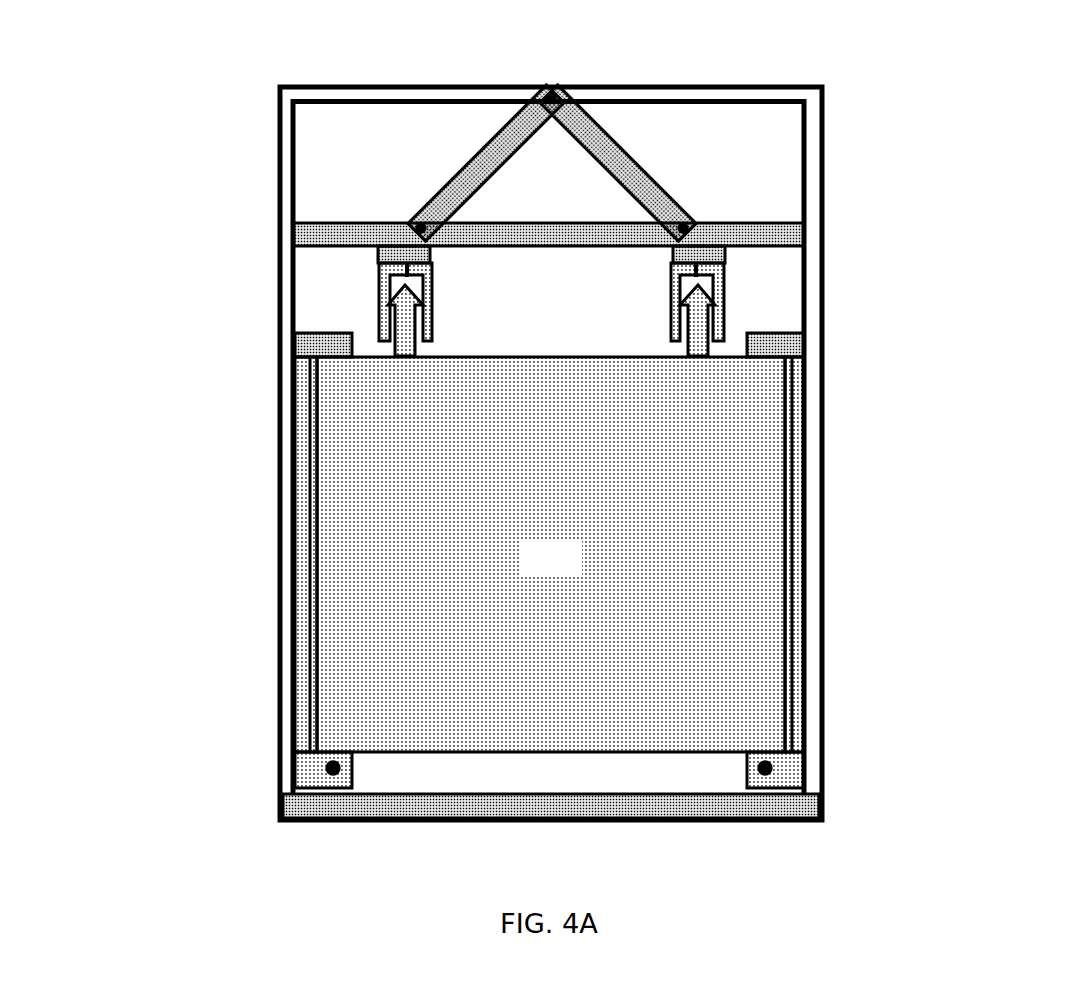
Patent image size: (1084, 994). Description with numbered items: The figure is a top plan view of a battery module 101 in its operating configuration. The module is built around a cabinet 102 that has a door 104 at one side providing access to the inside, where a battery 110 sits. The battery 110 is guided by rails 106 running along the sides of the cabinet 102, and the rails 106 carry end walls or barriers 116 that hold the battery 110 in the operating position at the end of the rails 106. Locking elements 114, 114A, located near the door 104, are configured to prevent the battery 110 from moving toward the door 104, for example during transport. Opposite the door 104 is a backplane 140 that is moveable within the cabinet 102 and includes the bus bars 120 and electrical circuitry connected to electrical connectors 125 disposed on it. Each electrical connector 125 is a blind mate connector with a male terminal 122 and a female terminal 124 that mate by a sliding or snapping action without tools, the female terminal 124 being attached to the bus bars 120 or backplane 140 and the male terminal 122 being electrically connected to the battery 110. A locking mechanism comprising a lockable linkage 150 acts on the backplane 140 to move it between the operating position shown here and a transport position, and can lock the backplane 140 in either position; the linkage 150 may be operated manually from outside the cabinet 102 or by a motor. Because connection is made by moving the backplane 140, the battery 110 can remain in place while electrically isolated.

The battery module 101 is at (576, 38).
The cabinet 102 is at (825, 455).
The door 104 is at (283, 808).
The rails 106 is at (305, 558).
The battery 110 is at (577, 571).
The locking element 114 is at (430, 735).
The locking element 114A is at (328, 767).
The end wall or barrier 116 is at (308, 343).
The bus bar 120 is at (372, 243).
The male terminal 122 is at (403, 327).
The female terminal 124 is at (380, 298).
The electrical connector 125 is at (130, 243).
The backplane 140 is at (803, 237).
The lockable linkage 150 is at (620, 155).